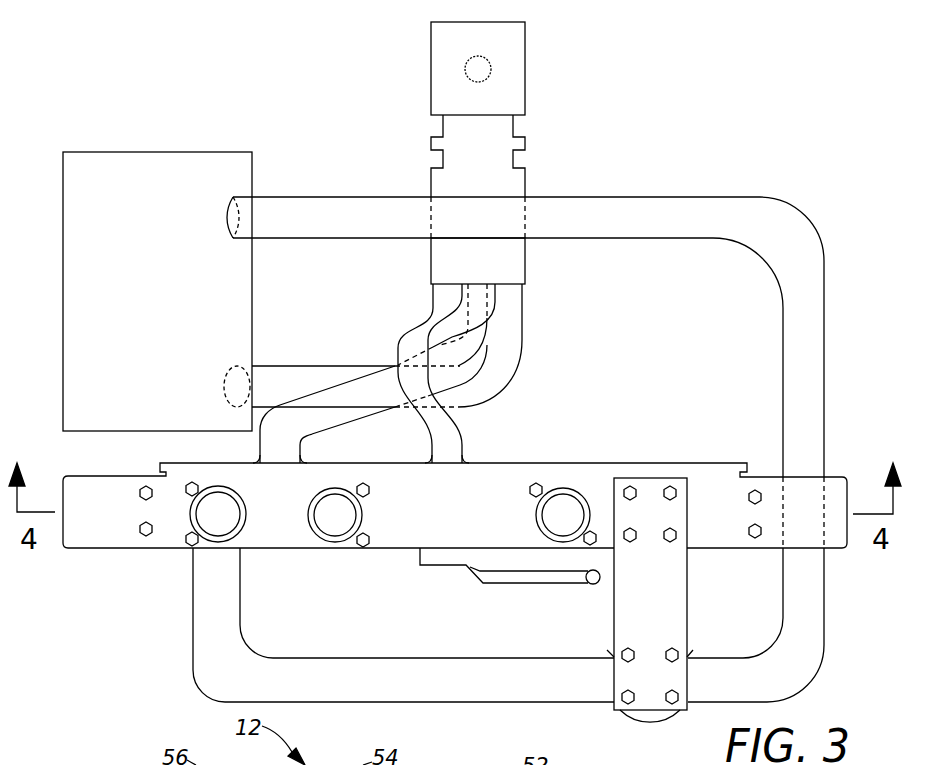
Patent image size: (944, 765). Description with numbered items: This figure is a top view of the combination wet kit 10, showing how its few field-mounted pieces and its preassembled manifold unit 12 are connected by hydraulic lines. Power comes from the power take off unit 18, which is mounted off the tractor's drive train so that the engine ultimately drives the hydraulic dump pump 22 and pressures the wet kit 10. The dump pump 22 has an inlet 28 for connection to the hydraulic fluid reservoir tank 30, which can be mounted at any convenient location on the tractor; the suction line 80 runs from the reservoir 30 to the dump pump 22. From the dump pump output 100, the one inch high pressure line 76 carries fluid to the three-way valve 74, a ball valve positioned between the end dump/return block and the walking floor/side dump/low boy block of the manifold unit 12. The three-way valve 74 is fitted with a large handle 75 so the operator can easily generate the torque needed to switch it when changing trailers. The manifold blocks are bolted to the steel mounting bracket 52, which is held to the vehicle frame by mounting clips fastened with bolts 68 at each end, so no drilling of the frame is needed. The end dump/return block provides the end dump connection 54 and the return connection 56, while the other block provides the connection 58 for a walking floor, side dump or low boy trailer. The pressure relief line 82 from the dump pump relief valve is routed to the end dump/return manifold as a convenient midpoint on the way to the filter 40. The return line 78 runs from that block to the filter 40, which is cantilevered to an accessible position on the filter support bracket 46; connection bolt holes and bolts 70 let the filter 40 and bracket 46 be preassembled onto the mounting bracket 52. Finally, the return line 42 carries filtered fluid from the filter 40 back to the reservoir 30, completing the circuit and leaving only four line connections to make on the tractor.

The wet kit 10 is at (640, 118).
The manifold unit 12 is at (629, 421).
The power take off unit 18 is at (517, 98).
The hydraulic pump 22 is at (517, 180).
The inlet 28 is at (522, 296).
The hydraulic fluid reservoir tank 30 is at (228, 178).
The filter 40 is at (648, 722).
The return line 42 is at (622, 200).
The filter support bracket 46 is at (682, 604).
The mounting bracket 52 is at (700, 473).
The end dump connection 54 is at (318, 538).
The return connection 56 is at (250, 530).
The walking floor/side dump/low boy connection 58 is at (580, 490).
The bolts 68 is at (140, 493).
The connection bolts 70 is at (670, 488).
The three-way valve 74 is at (443, 568).
The handle 75 is at (515, 583).
The high pressure line 76 is at (452, 420).
The return line 78 is at (387, 657).
The suction line 80 is at (317, 364).
The pressure relief line 82 is at (328, 433).
The dump pump output 100 is at (497, 288).